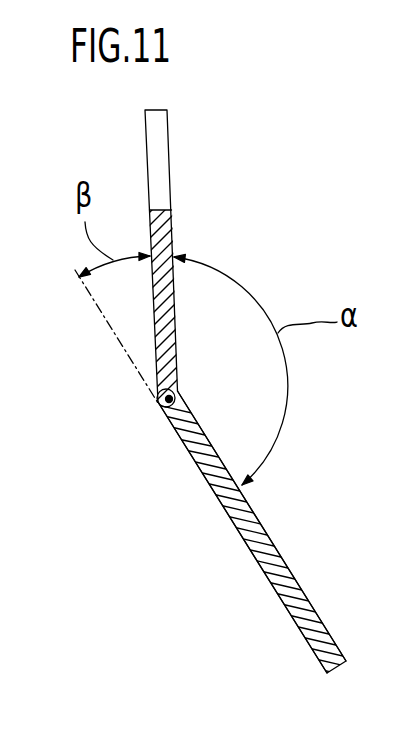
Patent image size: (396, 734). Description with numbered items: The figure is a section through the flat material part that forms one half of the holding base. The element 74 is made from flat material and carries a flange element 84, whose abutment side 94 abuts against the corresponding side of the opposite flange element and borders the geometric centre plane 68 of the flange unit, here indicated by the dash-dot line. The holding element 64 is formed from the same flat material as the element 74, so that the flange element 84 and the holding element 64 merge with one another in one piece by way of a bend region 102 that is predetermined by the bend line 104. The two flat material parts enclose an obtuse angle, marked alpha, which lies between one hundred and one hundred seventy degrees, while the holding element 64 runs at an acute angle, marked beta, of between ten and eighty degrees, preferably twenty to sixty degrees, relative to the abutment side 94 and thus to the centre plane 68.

The holding element 64 is at (178, 231).
The centre plane 68 is at (119, 342).
The element 74 is at (290, 550).
The flange element 84 is at (297, 598).
The abutment side 94 is at (226, 518).
The bend region 102 is at (173, 395).
The bend line 104 is at (163, 407).